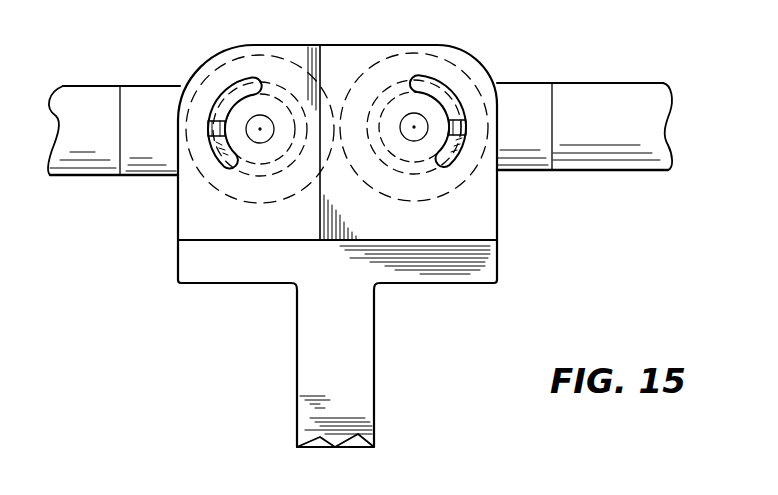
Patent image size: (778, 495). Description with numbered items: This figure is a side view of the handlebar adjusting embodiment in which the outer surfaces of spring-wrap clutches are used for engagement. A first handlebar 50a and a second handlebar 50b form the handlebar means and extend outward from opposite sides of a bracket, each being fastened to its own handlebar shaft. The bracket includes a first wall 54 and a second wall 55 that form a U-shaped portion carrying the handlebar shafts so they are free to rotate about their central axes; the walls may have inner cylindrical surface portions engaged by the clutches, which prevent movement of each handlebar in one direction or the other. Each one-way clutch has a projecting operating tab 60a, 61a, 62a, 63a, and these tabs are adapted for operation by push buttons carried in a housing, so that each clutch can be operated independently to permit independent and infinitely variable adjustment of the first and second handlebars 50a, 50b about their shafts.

The first handlebar 50a is at (576, 88).
The second handlebar 50b is at (97, 93).
The first wall 54 is at (333, 224).
The second wall 55 is at (349, 50).
The operating tab 60a is at (510, 147).
The operating tab 61a is at (463, 123).
The operating tab 62a is at (159, 172).
The operating tab 63a is at (210, 134).